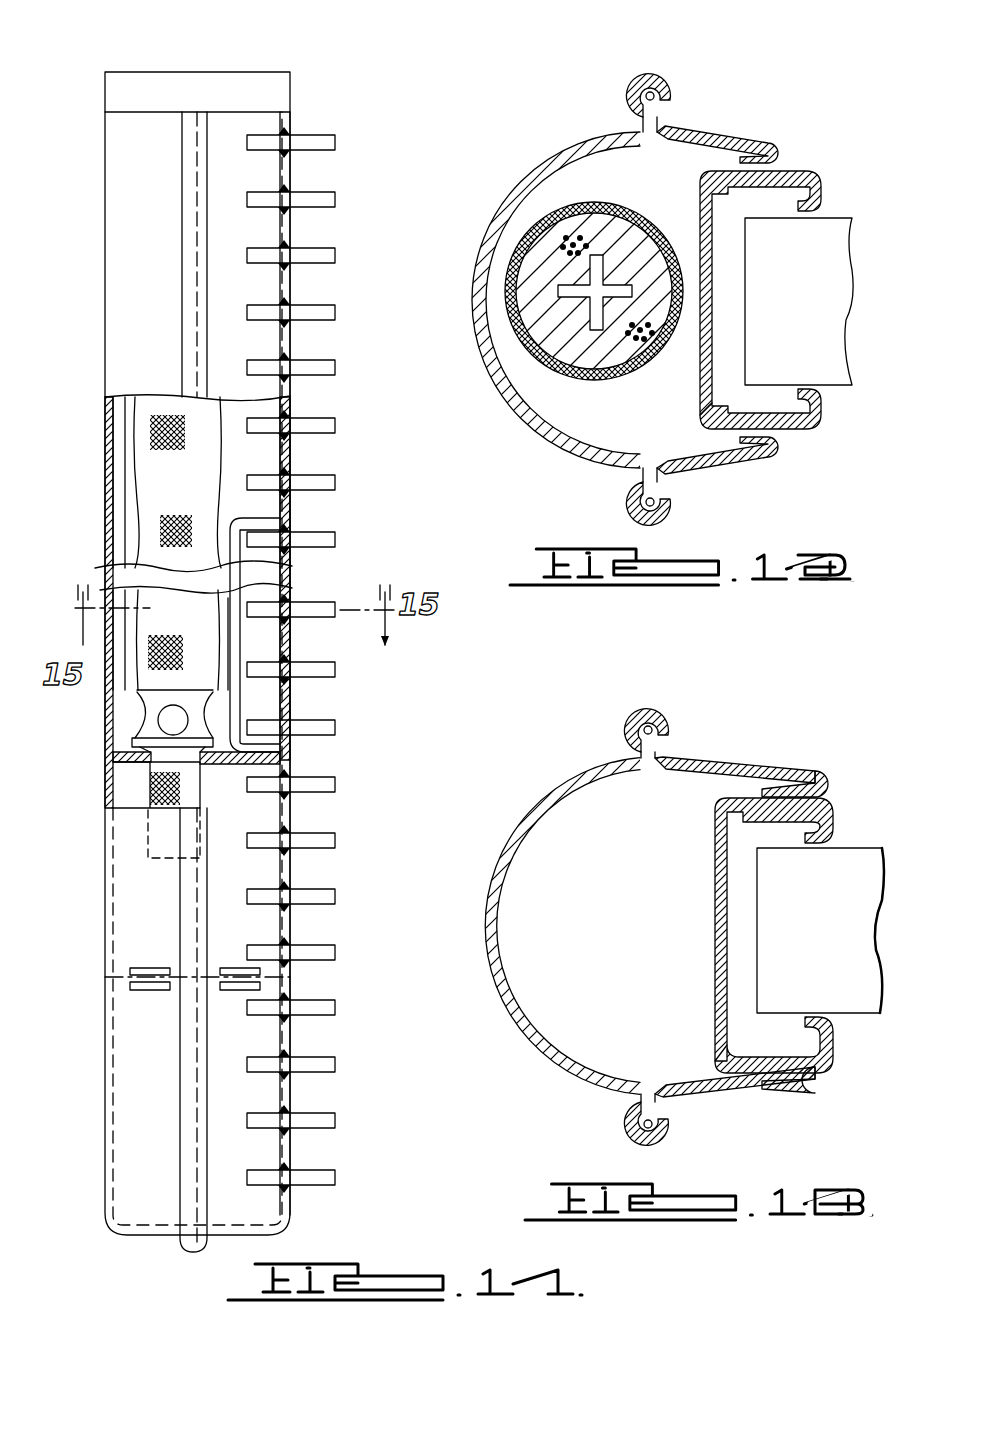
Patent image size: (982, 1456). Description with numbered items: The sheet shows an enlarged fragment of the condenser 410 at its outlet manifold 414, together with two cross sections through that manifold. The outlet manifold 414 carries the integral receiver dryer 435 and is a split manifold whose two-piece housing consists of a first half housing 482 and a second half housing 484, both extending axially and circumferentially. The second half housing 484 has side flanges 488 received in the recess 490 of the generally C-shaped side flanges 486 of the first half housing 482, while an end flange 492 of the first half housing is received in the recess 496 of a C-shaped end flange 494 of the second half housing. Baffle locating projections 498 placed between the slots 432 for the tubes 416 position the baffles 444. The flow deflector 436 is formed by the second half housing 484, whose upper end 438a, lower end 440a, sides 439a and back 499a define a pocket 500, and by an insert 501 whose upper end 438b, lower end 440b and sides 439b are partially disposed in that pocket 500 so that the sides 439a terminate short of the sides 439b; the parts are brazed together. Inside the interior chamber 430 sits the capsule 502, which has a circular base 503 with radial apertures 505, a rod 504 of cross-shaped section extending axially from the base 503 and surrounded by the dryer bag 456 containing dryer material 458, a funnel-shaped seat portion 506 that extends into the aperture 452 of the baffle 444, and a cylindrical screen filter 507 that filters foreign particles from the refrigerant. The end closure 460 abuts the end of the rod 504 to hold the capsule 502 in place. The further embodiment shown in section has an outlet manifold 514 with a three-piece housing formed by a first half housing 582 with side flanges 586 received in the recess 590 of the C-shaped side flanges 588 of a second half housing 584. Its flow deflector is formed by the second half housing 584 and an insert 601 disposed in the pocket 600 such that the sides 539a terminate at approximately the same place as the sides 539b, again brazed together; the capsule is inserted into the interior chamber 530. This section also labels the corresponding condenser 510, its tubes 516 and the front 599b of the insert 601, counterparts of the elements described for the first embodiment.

In FIG. 14, the condenser 410 is at (150, 57).
In FIG. 14, the end closure 460 is at (222, 82).
In FIG. 14, the outlet manifold 414 is at (105, 172).
In FIG. 15, the outlet manifold 414 is at (735, 135).
In FIG. 14, the tubes 416 is at (340, 195).
In FIG. 15, the tubes 416 is at (770, 388).
In FIG. 14, the slots 432 is at (292, 1045).
In FIG. 15, the slots 432 is at (792, 218).
In FIG. 14, the integral receiver dryer 435 is at (105, 402).
In FIG. 14, the dryer bag 456 is at (150, 460).
In FIG. 15, the dryer bag 456 is at (528, 240).
In FIG. 14, the interior chamber 430 is at (120, 497).
In FIG. 15, the interior chamber 430 is at (548, 195).
In FIG. 14, the capsule 502 is at (126, 545).
In FIG. 15, the capsule 502 is at (505, 293).
In FIG. 14, the back 499a is at (228, 612).
In FIG. 15, the back 499a is at (692, 270).
In FIG. 14, the upper end 438a is at (258, 520).
In FIG. 14, the upper end 438b is at (282, 540).
In FIG. 14, the insert 501 is at (292, 647).
In FIG. 15, the insert 501 is at (822, 200).
In FIG. 14, the flow deflector 436 is at (295, 700).
In FIG. 15, the flow deflector 436 is at (823, 215).
In FIG. 14, the pocket 500 is at (268, 700).
In FIG. 15, the pocket 500 is at (720, 335).
In FIG. 14, the lower end 440b is at (272, 738).
In FIG. 14, the baffle locating projections 498 is at (285, 752).
In FIG. 14, the baffles 444 is at (282, 768).
In FIG. 14, the base 503 is at (137, 695).
In FIG. 14, the apertures 505 is at (133, 737).
In FIG. 14, the seat portion 506 is at (150, 758).
In FIG. 14, the aperture 452 is at (130, 778).
In FIG. 14, the filter 507 is at (165, 800).
In FIG. 14, the lower end 440a is at (237, 760).
In FIG. 14, the first half housing 482 is at (105, 1095).
In FIG. 15, the first half housing 482 is at (575, 142).
In FIG. 14, the second half housing 484 is at (292, 1212).
In FIG. 15, the second half housing 484 is at (775, 160).
In FIG. 14, the end flange 494 is at (215, 1250).
In FIG. 14, the end flange 492 is at (185, 1242).
In FIG. 14, the recess 496 is at (190, 1268).
In FIG. 15, the side flanges 486 is at (642, 85).
In FIG. 15, the recess 490 is at (660, 92).
In FIG. 15, the side flanges 488 is at (668, 125).
In FIG. 15, the sides 439a is at (752, 158).
In FIG. 15, the sides 439b is at (775, 183).
In FIG. 15, the dryer material 458 is at (605, 228).
In FIG. 15, the rod 504 is at (585, 300).
In FIG. 15, the lower hook 599b is at (818, 405).
In FIG. 16, the filter cartridge assembly 510 is at (600, 705).
In FIG. 16, the outlet manifold 514 is at (548, 790).
In FIG. 16, the recess 590 is at (644, 712).
In FIG. 16, the side flanges 588 is at (668, 725).
In FIG. 16, the side flanges 586 is at (662, 745).
In FIG. 16, the sides 539a is at (790, 790).
In FIG. 16, the sides 539b is at (758, 832).
In FIG. 16, the insert 601 is at (835, 822).
In FIG. 16, the second half housing 584 is at (728, 785).
In FIG. 16, the first half housing 582 is at (517, 828).
In FIG. 16, the fin box 516 is at (848, 870).
In FIG. 16, the interior chamber 530 is at (505, 876).
In FIG. 16, the pocket 600 is at (728, 955).